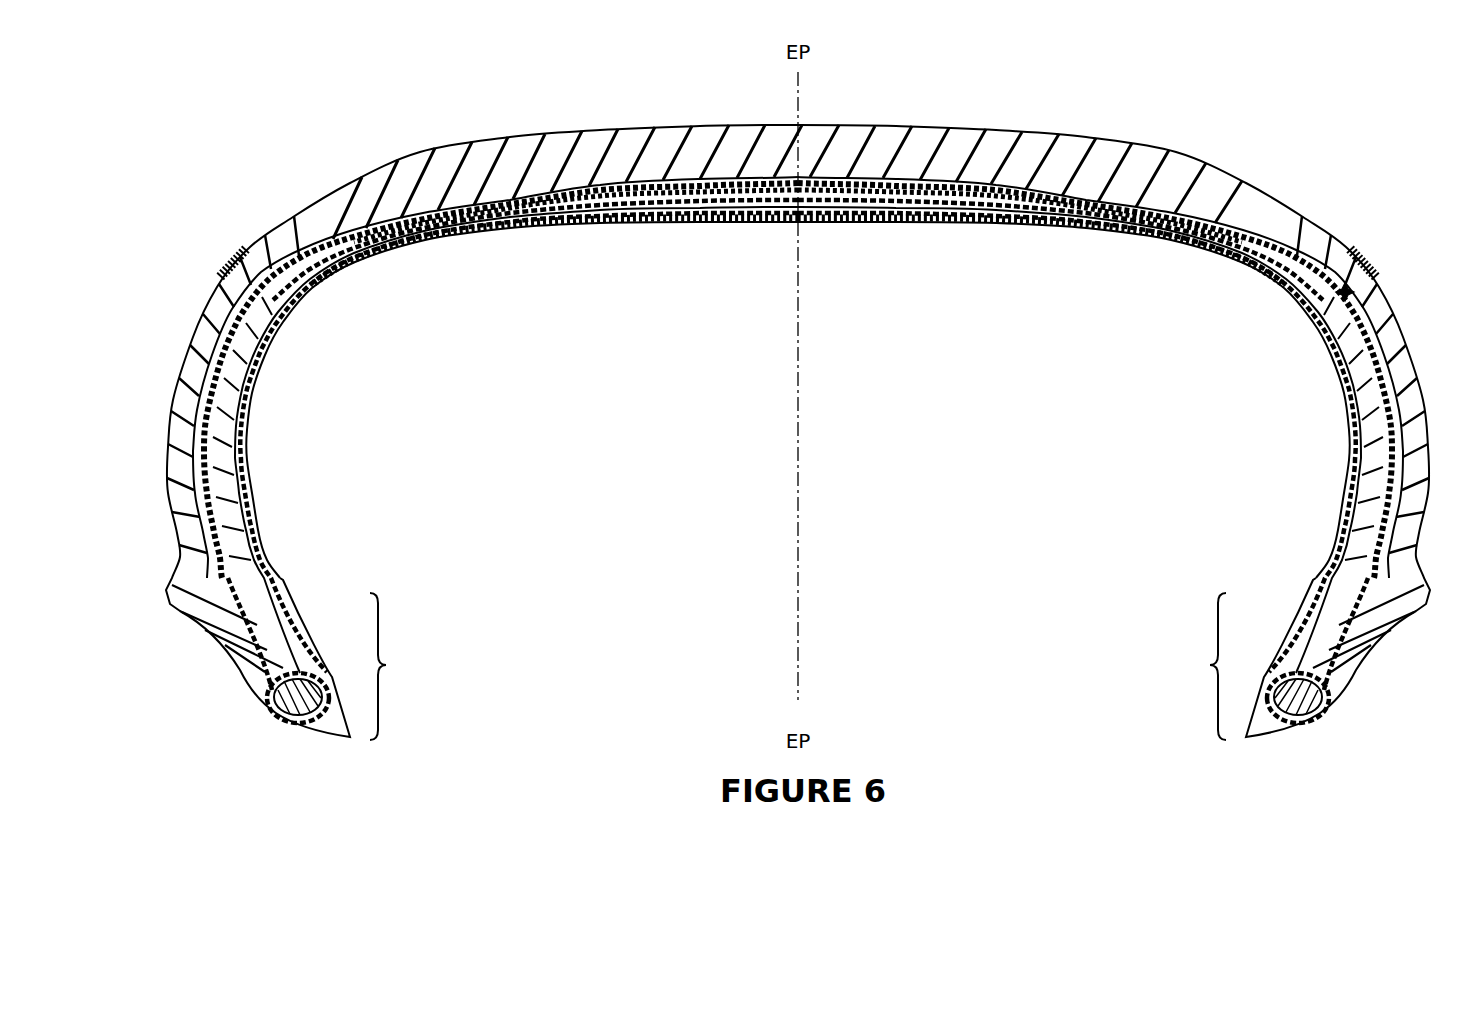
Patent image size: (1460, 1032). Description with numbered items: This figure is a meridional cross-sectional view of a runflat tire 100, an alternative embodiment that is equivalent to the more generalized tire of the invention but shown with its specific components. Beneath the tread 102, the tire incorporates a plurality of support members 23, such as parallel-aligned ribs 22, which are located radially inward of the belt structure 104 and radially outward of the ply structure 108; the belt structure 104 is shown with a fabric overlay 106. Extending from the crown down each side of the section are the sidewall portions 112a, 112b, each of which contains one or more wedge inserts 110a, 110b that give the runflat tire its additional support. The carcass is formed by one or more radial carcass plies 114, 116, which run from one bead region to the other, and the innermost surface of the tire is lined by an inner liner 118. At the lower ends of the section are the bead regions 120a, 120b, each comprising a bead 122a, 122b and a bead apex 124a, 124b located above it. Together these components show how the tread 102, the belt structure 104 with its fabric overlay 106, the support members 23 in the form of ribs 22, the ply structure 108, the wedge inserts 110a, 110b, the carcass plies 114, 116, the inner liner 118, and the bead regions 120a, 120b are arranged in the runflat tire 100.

The runflat tire 100 is at (272, 146).
The tread 102 is at (511, 137).
The belt structure 104 is at (840, 177).
The fabric overlay 106 is at (667, 177).
The ply structure 108 is at (657, 217).
The wedge insert 110a is at (250, 403).
The wedge insert 110b is at (1370, 423).
The sidewall portion 112a is at (173, 402).
The sidewall portion 112b is at (1423, 402).
The radial carcass ply 114 is at (307, 303).
The radial carcass ply 116 is at (260, 360).
The inner liner 118 is at (397, 250).
The bead region 120a is at (406, 666).
The bead region 120b is at (1188, 666).
The bead 122a is at (270, 690).
The bead 122b is at (1300, 697).
The bead apex 124a is at (270, 620).
The bead apex 124b is at (1325, 645).
The parallel-aligned ribs 22 is at (1333, 250).
The support members 23 is at (1345, 292).